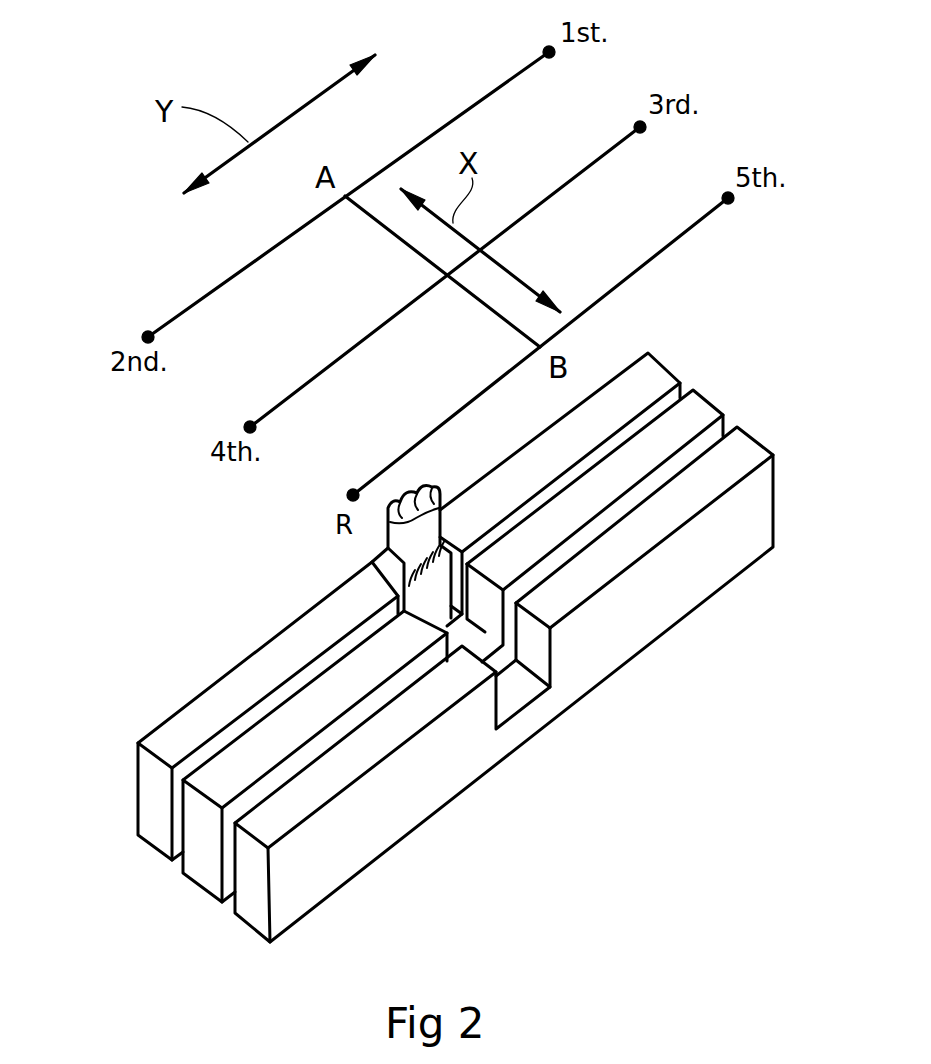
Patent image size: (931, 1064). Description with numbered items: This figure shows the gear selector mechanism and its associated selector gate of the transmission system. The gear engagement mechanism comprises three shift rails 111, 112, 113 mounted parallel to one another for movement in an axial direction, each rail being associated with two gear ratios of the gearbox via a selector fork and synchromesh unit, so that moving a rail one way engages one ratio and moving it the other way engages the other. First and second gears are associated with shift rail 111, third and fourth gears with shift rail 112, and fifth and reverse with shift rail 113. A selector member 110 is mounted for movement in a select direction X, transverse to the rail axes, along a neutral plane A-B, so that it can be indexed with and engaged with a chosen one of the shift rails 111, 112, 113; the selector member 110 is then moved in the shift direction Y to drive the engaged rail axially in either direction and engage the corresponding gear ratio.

The selector member 110 is at (388, 548).
The shift rail 111 is at (240, 693).
The shift rail 112 is at (245, 775).
The shift rail 113 is at (452, 788).